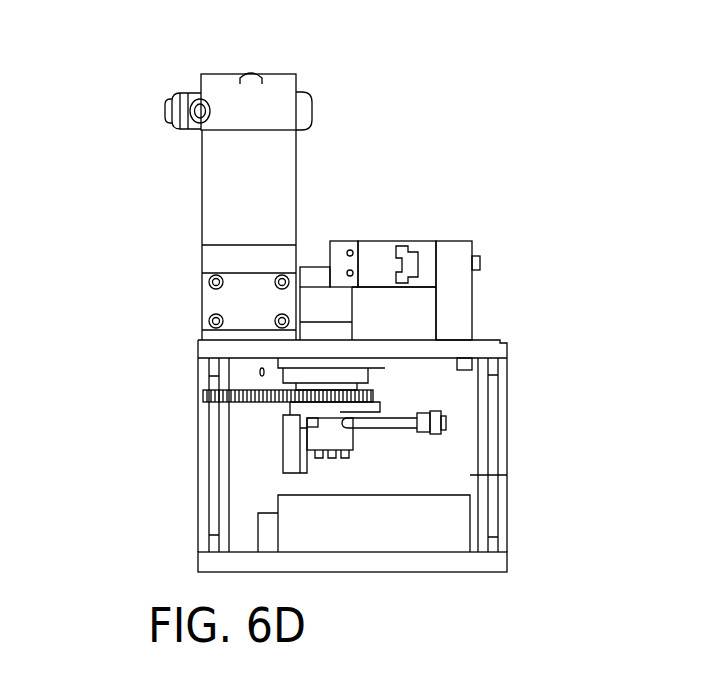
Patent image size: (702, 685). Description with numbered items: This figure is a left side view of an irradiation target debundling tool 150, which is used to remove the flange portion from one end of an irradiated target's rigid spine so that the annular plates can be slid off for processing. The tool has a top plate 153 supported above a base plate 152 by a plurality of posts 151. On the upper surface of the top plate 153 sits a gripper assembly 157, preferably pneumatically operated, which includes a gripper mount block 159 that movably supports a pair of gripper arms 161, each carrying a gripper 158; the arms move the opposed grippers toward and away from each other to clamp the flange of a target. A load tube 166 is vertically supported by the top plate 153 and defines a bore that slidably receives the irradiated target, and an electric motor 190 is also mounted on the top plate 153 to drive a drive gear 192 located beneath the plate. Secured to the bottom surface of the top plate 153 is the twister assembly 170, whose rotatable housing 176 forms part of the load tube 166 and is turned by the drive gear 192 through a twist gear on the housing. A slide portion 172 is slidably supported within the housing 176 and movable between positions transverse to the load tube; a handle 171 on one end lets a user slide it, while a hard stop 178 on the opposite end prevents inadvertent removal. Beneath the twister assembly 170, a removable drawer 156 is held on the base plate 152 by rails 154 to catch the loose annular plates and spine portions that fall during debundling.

The irradiation target debundling tool 150 is at (134, 89).
The electric motor 190 is at (264, 201).
The load tube 166 is at (325, 308).
The gripper 158 is at (313, 276).
The gripper arm 161 is at (378, 258).
The gripper mount block 159 is at (424, 248).
The gripper assembly 157 is at (455, 268).
The top plate 153 is at (500, 340).
The post 151 is at (200, 497).
The drive gear 192 is at (203, 396).
The housing 176 is at (363, 404).
The handle 171 is at (278, 443).
The twister assembly 170 is at (320, 470).
The slide portion 172 is at (368, 428).
The hard stop 178 is at (447, 424).
The rail 154 is at (260, 534).
The removable drawer 156 is at (410, 512).
The base plate 152 is at (478, 572).